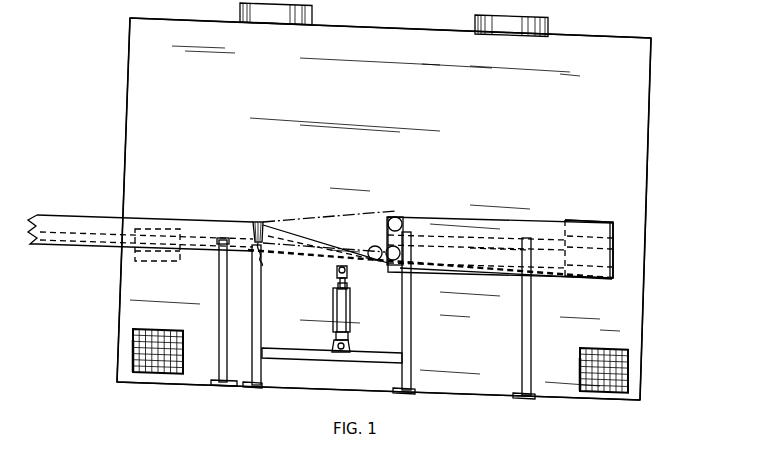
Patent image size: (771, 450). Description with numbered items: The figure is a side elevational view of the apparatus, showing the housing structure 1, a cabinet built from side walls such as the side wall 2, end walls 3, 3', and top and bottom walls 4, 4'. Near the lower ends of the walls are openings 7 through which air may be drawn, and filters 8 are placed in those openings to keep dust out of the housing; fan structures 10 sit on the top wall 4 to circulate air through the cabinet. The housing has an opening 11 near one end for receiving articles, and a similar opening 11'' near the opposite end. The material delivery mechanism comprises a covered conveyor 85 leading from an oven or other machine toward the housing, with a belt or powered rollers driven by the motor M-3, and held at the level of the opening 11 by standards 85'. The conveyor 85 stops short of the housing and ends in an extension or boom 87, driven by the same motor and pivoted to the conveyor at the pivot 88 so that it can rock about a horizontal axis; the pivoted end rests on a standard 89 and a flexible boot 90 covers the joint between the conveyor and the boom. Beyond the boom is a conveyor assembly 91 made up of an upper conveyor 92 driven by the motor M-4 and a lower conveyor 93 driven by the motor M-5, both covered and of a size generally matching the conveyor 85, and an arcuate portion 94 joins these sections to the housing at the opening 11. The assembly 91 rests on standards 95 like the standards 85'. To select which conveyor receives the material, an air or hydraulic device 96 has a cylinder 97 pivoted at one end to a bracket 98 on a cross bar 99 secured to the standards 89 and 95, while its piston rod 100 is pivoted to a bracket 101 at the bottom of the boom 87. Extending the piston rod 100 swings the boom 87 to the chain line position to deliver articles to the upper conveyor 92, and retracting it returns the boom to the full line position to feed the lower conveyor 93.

The housing structure 1 is at (662, 73).
The side wall 2 is at (646, 126).
The end wall 3 is at (661, 282).
The end wall 3' is at (103, 200).
The top wall 4 is at (390, 22).
The bottom wall 4' is at (378, 405).
The openings 7 is at (157, 330).
The filters 8 is at (170, 350).
The fan structures 10 is at (313, 17).
The opening 11 is at (602, 230).
The opening 11'' is at (172, 219).
The covered conveyor 85 is at (140, 212).
The standards 85' is at (206, 312).
The extension or boom 87 is at (311, 259).
The pivot 88 is at (262, 266).
The standard 89 is at (260, 318).
The flexible boot 90 is at (258, 220).
The conveyor assembly 91 is at (494, 211).
The upper conveyor 92 is at (440, 226).
The lower conveyor 93 is at (473, 262).
The arcuate portion 94 is at (580, 224).
The standards 95 is at (411, 325).
The air or hydraulic device 96 is at (357, 306).
The cylinder 97 is at (351, 321).
The bracket 98 is at (351, 346).
The cross bar 99 is at (378, 360).
The piston rod 100 is at (348, 286).
The bracket 101 is at (338, 268).
The motor M-3 is at (375, 246).
The motor M-4 is at (396, 217).
The motor M-5 is at (410, 265).